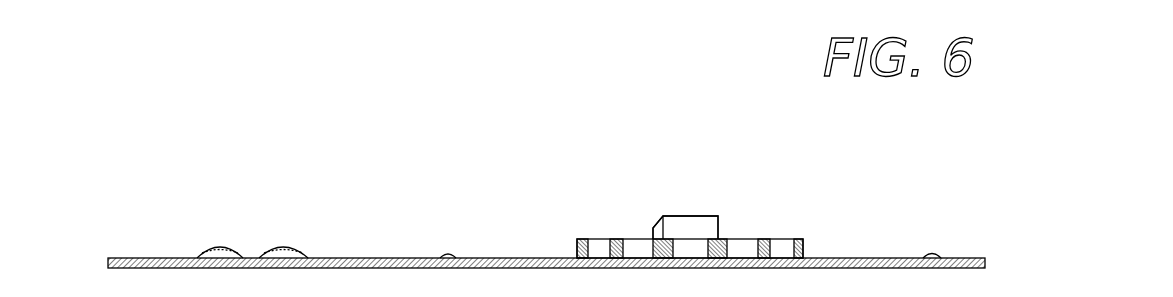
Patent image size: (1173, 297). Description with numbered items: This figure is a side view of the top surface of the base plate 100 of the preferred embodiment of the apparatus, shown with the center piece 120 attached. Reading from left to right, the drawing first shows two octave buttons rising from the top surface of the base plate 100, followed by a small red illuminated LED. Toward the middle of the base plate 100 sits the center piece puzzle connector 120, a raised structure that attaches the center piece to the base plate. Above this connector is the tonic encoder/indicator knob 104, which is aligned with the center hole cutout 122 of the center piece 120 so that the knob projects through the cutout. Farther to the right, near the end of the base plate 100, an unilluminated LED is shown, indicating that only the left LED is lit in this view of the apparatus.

The base plate 100 is at (104, 262).
The center piece puzzle connector 120 is at (599, 232).
The tonic encoder/indicator knob 104 is at (684, 210).
The center hole cutout 122 is at (685, 227).